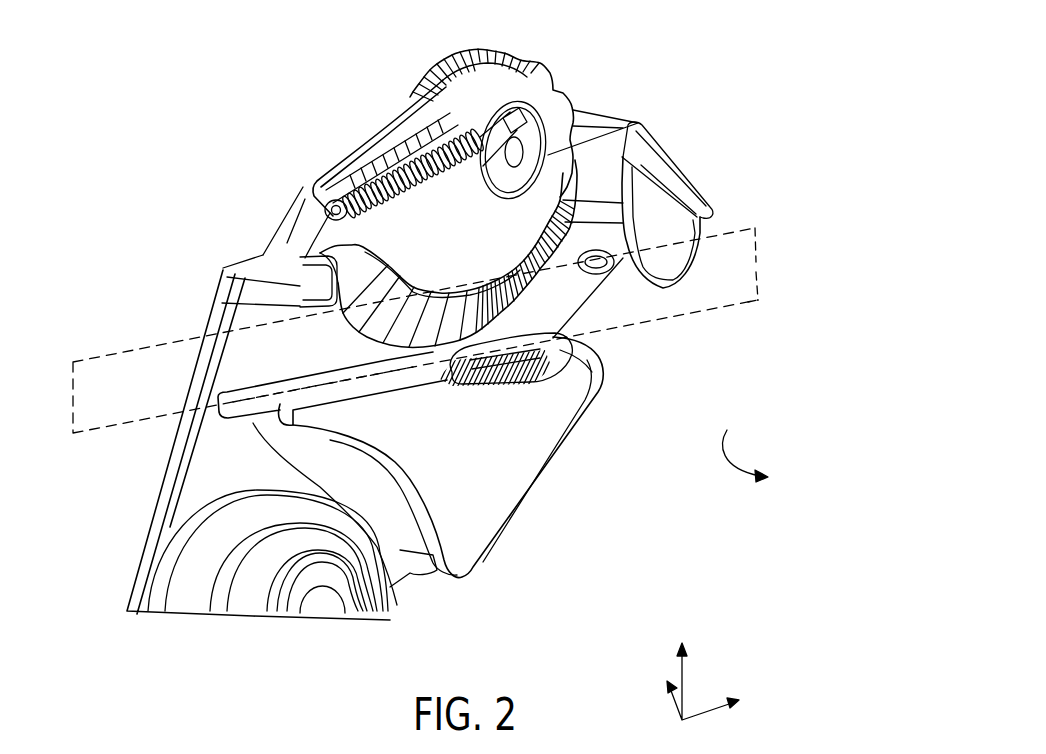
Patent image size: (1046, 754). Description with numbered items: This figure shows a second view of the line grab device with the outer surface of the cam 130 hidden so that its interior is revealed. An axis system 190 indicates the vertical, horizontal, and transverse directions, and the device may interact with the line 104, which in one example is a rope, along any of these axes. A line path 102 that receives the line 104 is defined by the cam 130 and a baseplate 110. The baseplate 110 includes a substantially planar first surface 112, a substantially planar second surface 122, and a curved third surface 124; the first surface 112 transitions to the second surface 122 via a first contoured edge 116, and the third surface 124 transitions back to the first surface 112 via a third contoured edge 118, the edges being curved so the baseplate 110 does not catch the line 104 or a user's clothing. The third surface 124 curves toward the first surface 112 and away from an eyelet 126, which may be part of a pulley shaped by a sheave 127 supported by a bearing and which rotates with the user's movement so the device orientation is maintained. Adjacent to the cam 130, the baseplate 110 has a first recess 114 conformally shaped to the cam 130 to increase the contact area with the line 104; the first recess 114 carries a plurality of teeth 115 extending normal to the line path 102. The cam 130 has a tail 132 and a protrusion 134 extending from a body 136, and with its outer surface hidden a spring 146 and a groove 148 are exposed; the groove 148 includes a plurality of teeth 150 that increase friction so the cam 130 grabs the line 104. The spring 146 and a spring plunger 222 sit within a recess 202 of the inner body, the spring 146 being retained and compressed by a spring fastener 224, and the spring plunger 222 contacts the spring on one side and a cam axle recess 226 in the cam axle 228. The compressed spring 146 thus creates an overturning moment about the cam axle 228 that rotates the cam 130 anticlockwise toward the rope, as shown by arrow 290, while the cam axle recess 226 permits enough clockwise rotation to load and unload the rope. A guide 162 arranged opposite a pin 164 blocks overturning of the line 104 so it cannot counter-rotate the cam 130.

The line path 102 is at (135, 351).
The line 104 is at (712, 283).
The baseplate 110 is at (422, 448).
The first surface 112 is at (573, 357).
The first recess 114 is at (520, 378).
The plurality of teeth 115 is at (485, 380).
The first contoured edge 116 is at (598, 368).
The third contoured edge 118 is at (230, 415).
The second surface 122 is at (523, 500).
The third surface 124 is at (357, 447).
The eyelet 126 is at (330, 610).
The sheave 127 is at (200, 612).
The cam 130 is at (356, 158).
The tail 132 is at (318, 182).
The protrusion 134 is at (548, 262).
The body 136 is at (540, 62).
The spring 146 is at (377, 153).
The groove 148 is at (340, 345).
The plurality of teeth 150 is at (373, 290).
The guide 162 is at (682, 257).
The pin 164 is at (248, 268).
The axis system 190 is at (746, 668).
The recess 202 is at (416, 100).
The spring plunger 222 is at (515, 116).
The spring fastener 224 is at (310, 193).
The cam axle recess 226 is at (484, 137).
The cam axle 228 is at (638, 123).
The arrow 290 is at (727, 452).